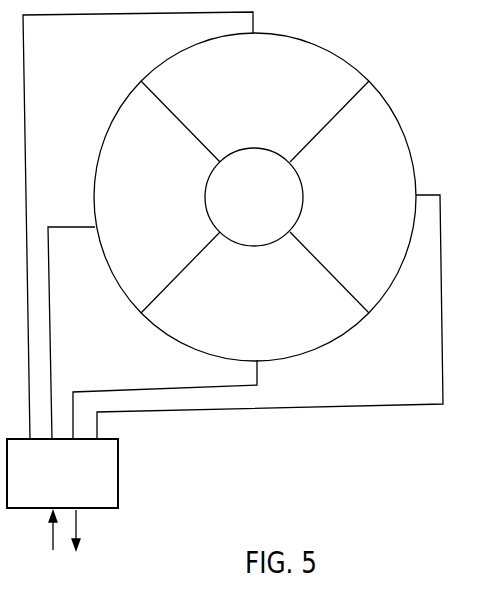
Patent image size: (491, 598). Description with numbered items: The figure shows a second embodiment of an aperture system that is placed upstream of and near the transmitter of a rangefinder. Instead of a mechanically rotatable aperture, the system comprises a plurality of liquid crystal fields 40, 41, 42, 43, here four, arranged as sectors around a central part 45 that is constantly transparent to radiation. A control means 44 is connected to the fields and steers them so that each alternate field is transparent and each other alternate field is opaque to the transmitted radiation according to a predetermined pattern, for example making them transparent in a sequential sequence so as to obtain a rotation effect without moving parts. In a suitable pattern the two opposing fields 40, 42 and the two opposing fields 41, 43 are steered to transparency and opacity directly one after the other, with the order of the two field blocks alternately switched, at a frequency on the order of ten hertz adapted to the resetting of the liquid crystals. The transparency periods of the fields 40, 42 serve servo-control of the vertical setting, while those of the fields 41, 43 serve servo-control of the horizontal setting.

The liquid crystal field 40 is at (326, 64).
The liquid crystal field 41 is at (407, 173).
The liquid crystal field 42 is at (298, 350).
The liquid crystal field 43 is at (107, 182).
The control means 44 is at (107, 480).
The central part 45 is at (287, 180).